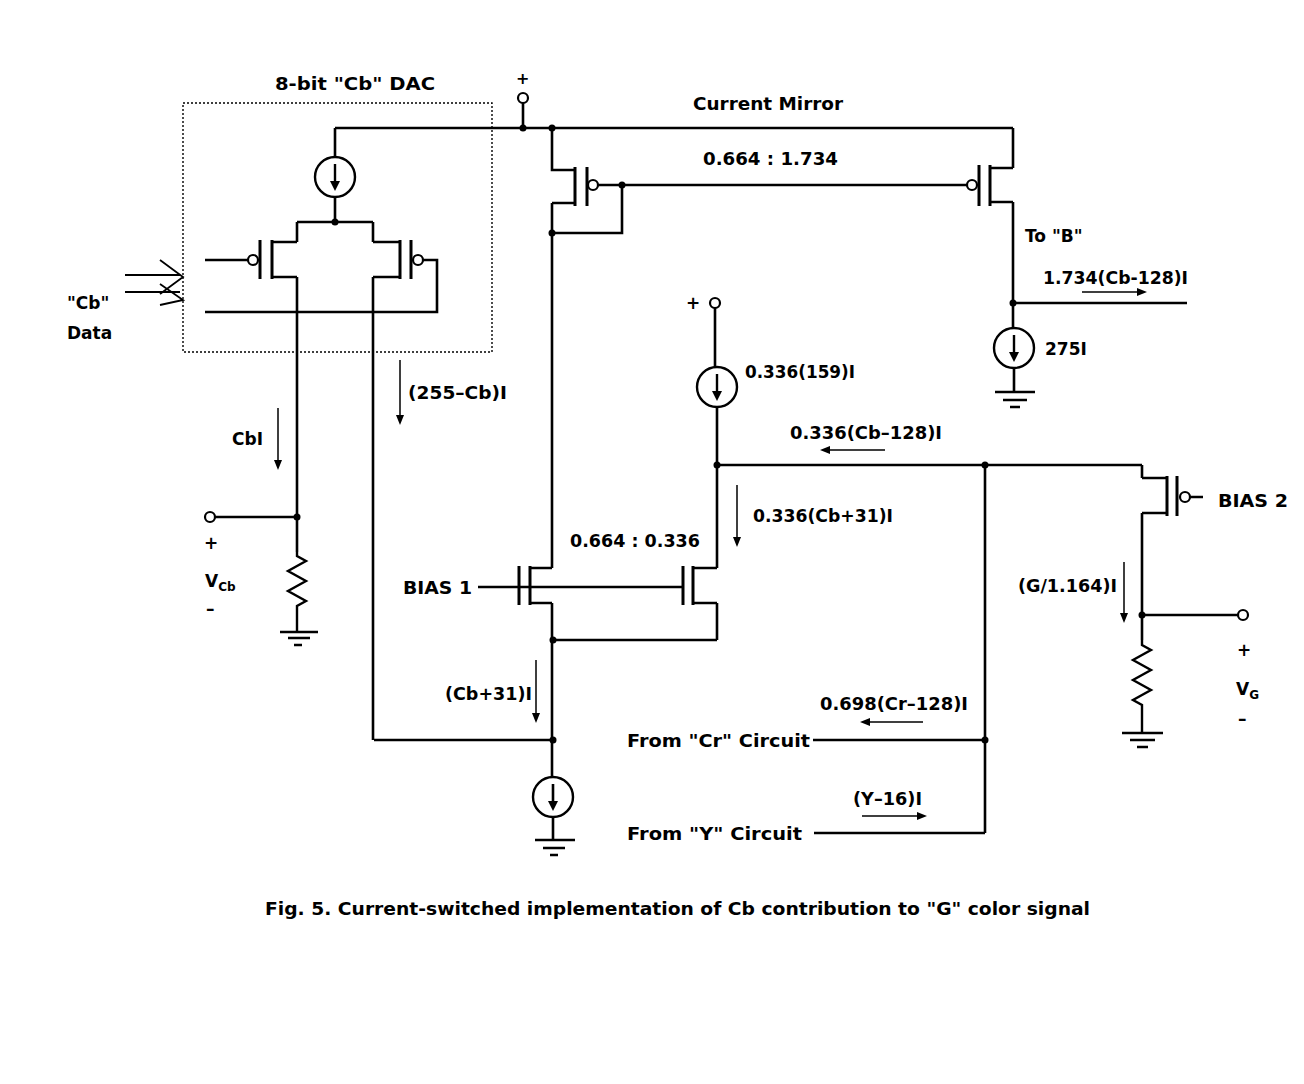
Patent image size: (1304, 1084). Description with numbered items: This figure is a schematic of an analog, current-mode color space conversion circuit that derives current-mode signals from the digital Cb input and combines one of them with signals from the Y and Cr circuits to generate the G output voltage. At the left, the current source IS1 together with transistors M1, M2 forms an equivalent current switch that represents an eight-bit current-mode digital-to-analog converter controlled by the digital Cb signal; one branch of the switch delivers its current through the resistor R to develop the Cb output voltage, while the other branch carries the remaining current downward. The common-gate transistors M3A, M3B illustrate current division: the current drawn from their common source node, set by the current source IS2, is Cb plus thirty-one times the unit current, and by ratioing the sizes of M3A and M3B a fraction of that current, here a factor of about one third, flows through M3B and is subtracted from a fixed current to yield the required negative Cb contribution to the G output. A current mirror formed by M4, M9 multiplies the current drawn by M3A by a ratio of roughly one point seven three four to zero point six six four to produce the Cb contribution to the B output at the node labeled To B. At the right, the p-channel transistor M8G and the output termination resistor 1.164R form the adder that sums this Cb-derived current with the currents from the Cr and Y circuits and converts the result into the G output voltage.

The transistor M1 is at (270, 250).
The transistor M2 is at (321, 267).
The common-gate transistor M3A is at (580, 602).
The common-gate transistor M3B is at (726, 585).
The current mirror transistor M4 is at (569, 180).
The current mirror transistor M9 is at (837, 185).
The p-channel transistor M8G is at (1153, 496).
The resistor R is at (309, 592).
The output termination resistor 1.164R is at (1098, 686).
The current source IS1 is at (384, 175).
The current source IS2 is at (500, 808).